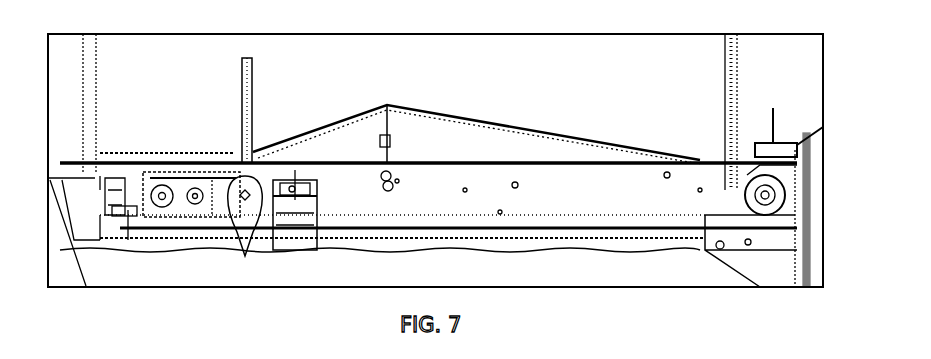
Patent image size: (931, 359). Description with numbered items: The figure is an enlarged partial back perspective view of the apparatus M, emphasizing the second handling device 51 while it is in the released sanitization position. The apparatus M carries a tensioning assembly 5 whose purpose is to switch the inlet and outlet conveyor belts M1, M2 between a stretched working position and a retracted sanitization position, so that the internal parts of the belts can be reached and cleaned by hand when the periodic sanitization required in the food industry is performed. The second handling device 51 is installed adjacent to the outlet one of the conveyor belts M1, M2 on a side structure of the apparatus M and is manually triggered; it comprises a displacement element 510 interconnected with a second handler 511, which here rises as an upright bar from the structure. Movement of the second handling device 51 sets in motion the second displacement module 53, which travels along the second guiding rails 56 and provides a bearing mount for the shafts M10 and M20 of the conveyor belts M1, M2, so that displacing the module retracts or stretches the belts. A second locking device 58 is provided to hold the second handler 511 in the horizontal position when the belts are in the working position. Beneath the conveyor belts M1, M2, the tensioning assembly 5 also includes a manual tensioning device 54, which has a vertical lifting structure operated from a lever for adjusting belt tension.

The apparatus M is at (110, 62).
The second handler 511 is at (248, 100).
The cables / belt M1, M2 is at (462, 114).
The manual tensioning device 54 is at (410, 205).
The tensioning assembly 5 is at (508, 195).
The second displacement module 53 is at (188, 177).
The shaft M20 is at (162, 198).
The shaft M10 is at (195, 198).
The second guiding rails 56 is at (121, 205).
The second handling device 51 is at (243, 270).
The displacement element 510 is at (244, 228).
The second locking device 58 is at (295, 197).